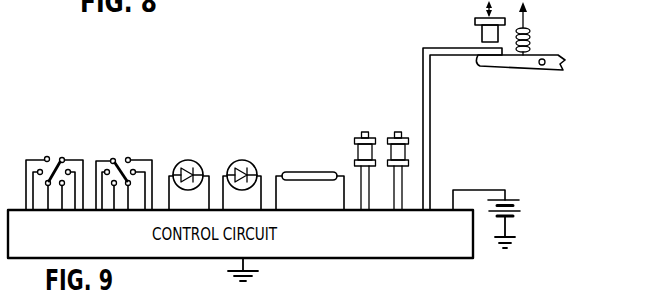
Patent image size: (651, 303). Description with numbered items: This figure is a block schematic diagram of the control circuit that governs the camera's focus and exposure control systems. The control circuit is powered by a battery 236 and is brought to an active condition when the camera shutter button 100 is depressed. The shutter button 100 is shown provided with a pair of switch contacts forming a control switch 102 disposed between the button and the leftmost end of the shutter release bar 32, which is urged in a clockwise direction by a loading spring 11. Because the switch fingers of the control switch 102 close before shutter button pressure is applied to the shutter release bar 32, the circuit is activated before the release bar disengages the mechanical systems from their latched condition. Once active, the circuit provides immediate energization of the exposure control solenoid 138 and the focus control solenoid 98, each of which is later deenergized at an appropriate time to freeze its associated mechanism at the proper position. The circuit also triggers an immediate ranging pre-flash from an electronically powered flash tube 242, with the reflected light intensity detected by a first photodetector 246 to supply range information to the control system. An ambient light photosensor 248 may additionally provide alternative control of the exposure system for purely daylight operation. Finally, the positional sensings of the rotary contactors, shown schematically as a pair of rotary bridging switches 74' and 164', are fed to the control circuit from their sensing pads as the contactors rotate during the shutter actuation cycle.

The rotary bridging switch 74' is at (51, 156).
The rotary bridging switch 164' is at (121, 152).
The ambient light photosensor 248 is at (195, 160).
The first photodetector 246 is at (239, 160).
The flash tube 242 is at (297, 170).
The exposure control solenoid 138 is at (355, 150).
The focus control solenoid 98 is at (405, 148).
The control switch 102 is at (447, 48).
The shutter button 100 is at (475, 21).
The loading spring 11 is at (530, 33).
The shutter release bar 32 is at (505, 69).
The battery 236 is at (523, 207).